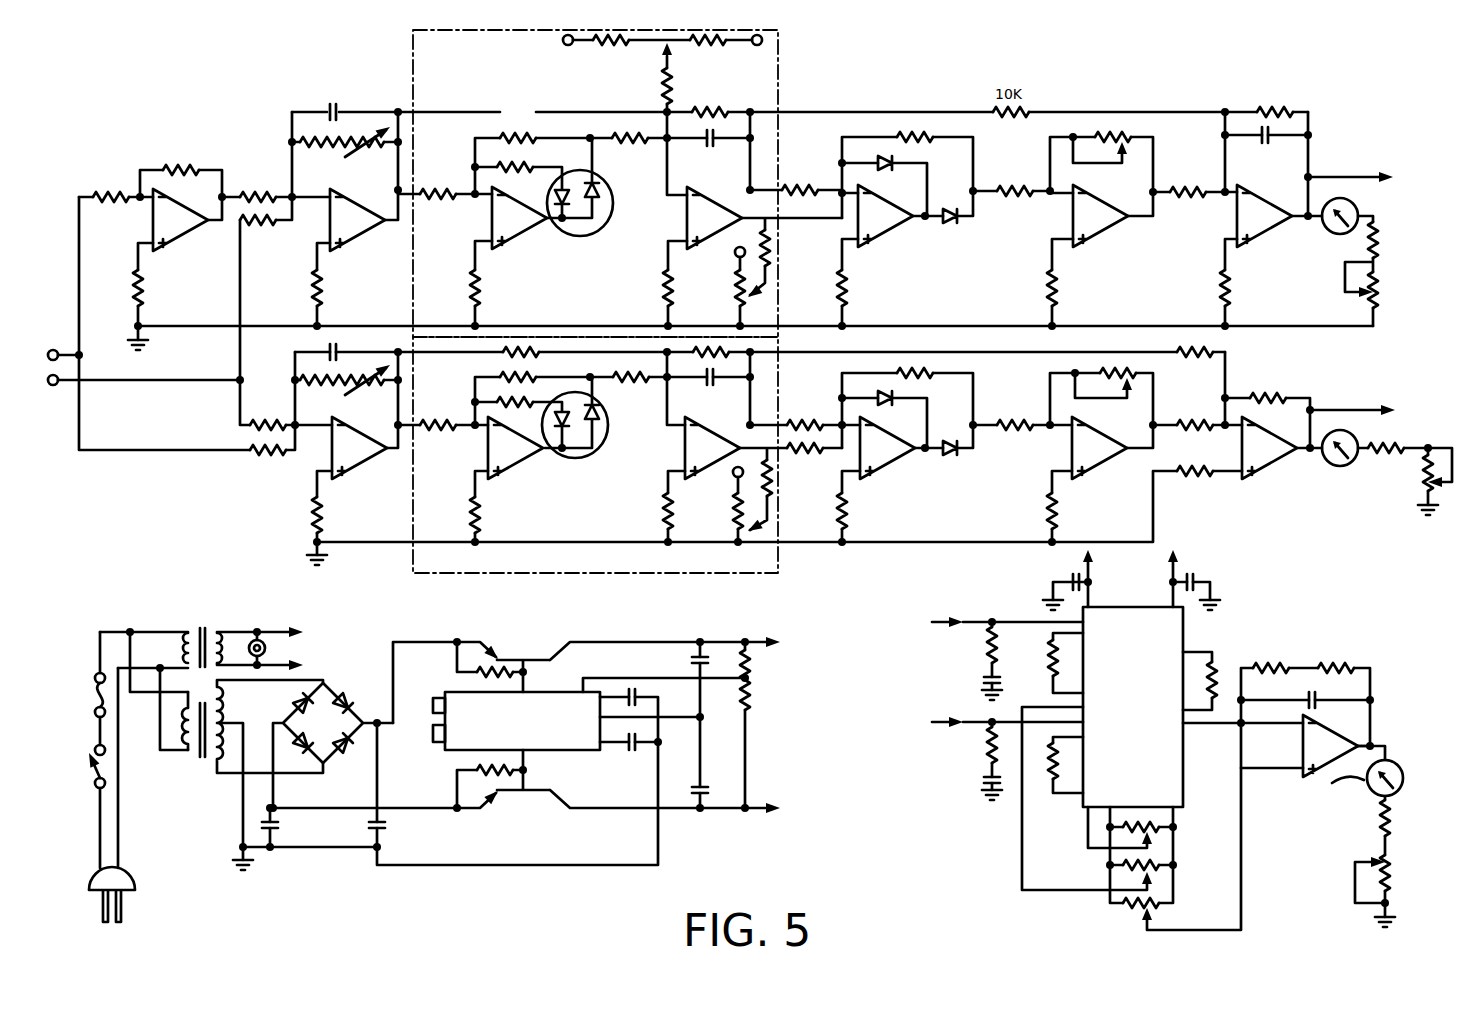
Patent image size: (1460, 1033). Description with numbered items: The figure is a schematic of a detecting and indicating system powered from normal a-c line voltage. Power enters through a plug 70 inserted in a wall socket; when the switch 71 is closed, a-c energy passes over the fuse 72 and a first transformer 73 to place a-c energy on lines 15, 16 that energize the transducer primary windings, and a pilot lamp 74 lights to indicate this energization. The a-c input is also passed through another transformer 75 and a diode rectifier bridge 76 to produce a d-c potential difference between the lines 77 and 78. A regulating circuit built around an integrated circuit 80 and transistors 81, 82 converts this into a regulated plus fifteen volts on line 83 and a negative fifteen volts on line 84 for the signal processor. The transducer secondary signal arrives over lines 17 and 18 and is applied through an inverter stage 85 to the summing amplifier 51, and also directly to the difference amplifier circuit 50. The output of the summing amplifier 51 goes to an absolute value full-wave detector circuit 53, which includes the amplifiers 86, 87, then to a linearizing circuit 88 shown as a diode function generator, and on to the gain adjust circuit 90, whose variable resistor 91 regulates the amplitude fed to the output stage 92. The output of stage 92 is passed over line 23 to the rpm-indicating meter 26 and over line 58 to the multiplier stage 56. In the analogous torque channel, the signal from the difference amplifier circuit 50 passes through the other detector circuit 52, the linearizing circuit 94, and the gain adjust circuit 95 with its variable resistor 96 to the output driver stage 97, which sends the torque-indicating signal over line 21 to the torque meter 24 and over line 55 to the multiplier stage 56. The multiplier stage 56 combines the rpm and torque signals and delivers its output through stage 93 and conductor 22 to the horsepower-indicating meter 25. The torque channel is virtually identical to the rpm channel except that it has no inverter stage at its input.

The line 15 is at (272, 628).
The line 16 is at (272, 668).
The line 17 is at (66, 386).
The line 18 is at (70, 353).
The line 21 is at (1308, 459).
The conductor 22 is at (1374, 744).
The line 23 is at (1312, 222).
The torque meter 24 is at (1354, 459).
The horsepower-indicating meter 25 is at (1393, 843).
The rpm-indicating meter 26 is at (1360, 205).
The difference amplifier circuit 50 is at (390, 494).
The summing amplifier 51 is at (388, 259).
The detector circuit 52 is at (604, 573).
The absolute value full-wave detector circuit 53 is at (792, 52).
The line 55 is at (1320, 402).
The multiplier stage 56 is at (1148, 729).
The line 58 is at (1352, 175).
The plug 70 is at (92, 886).
The switch 71 is at (93, 772).
The fuse 72 is at (95, 694).
The first transformer 73 is at (222, 623).
The pilot lamp 74 is at (267, 648).
The transformer 75 is at (247, 763).
The diode rectifier bridge 76 is at (336, 735).
The line 77 is at (391, 686).
The line 78 is at (332, 807).
The integrated circuit 80 is at (589, 721).
The transistor 81 is at (599, 655).
The transistor 82 is at (599, 799).
The line 83 is at (716, 812).
The line 84 is at (713, 640).
The inverter stage 85 is at (187, 236).
The amplifier 86 is at (532, 231).
The amplifier 87 is at (702, 182).
The linearizing circuit 88 is at (943, 221).
The gain adjust circuit 90 is at (1141, 221).
The variable resistor 91 is at (1130, 148).
The output stage 92 is at (1291, 208).
The stage 93 is at (1305, 747).
The linearizing circuit 94 is at (943, 457).
The gain adjust circuit 95 is at (1101, 457).
The variable resistor 96 is at (1132, 366).
The output driver stage 97 is at (1267, 415).